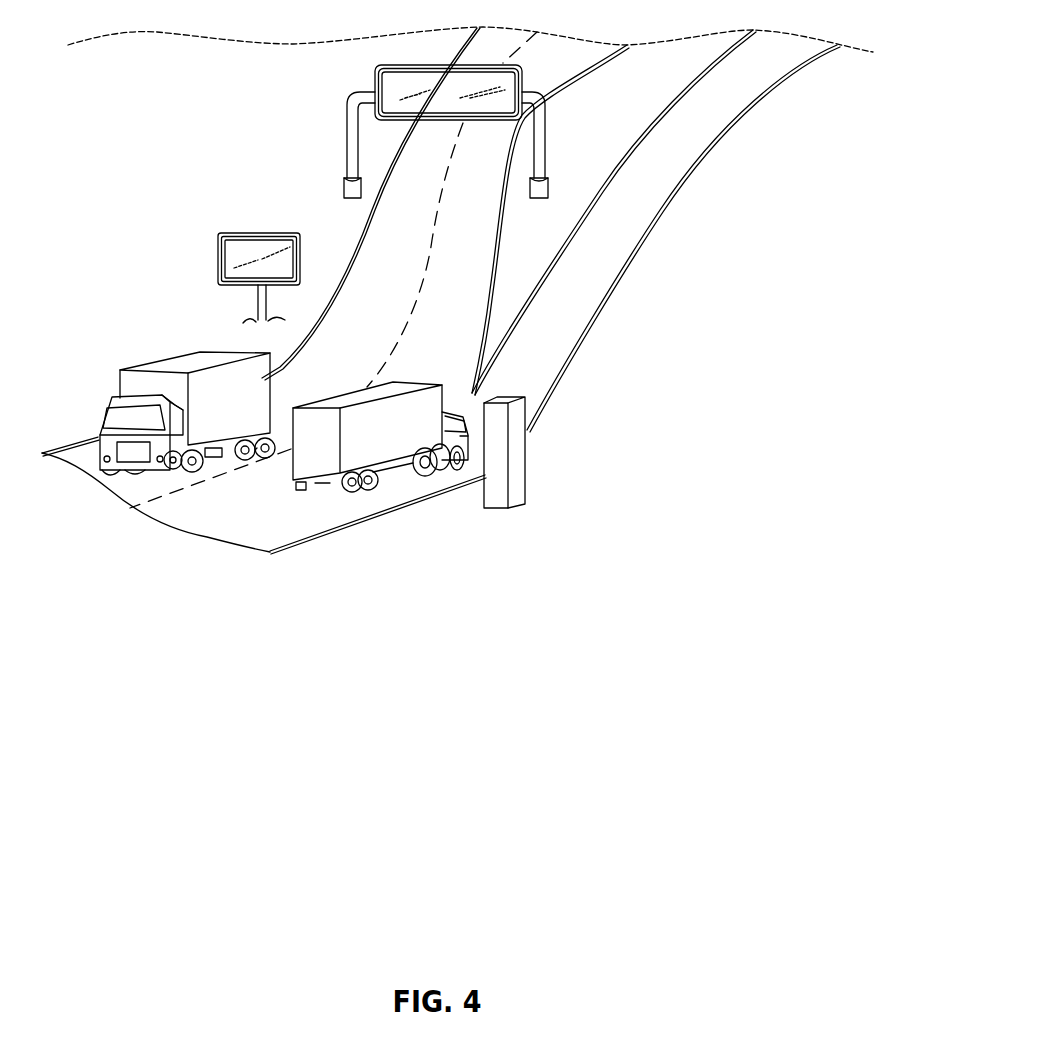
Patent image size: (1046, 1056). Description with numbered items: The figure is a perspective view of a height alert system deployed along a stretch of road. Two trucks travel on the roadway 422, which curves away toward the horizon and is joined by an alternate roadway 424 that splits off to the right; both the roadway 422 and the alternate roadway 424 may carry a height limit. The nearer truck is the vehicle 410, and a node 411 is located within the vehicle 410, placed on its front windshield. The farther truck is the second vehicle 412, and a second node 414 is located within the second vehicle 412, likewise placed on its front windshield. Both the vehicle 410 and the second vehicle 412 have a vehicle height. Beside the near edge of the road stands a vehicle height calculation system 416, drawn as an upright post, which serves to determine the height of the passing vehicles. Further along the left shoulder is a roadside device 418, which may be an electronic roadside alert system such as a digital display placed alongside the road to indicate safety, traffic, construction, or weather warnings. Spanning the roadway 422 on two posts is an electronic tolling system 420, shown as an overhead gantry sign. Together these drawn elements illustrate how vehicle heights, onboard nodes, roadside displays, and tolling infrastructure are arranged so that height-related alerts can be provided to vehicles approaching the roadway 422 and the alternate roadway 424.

The vehicle 410 is at (400, 440).
The node 411 is at (448, 445).
The second vehicle 412 is at (200, 360).
The second node 414 is at (112, 407).
The vehicle height calculation system 416 is at (525, 498).
The roadside device 418 is at (310, 268).
The electronic tolling system 420 is at (546, 160).
The roadway 422 is at (490, 280).
The alternate roadway 424 is at (612, 268).